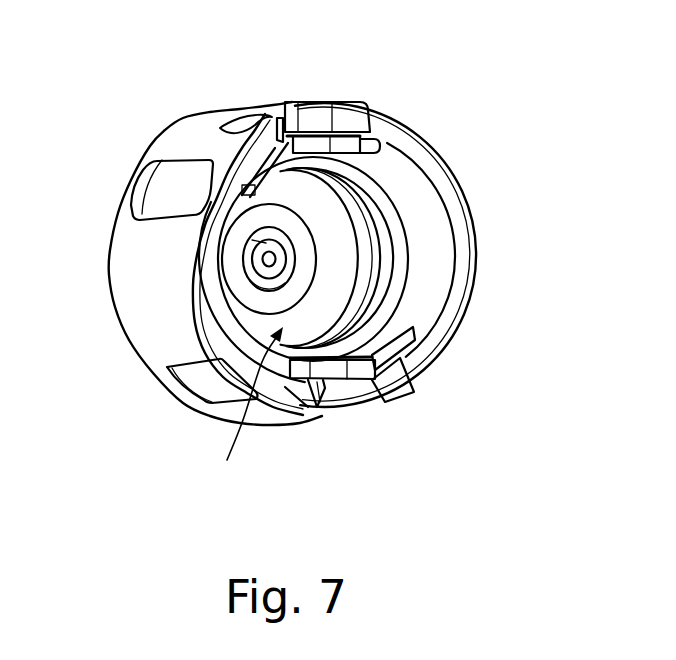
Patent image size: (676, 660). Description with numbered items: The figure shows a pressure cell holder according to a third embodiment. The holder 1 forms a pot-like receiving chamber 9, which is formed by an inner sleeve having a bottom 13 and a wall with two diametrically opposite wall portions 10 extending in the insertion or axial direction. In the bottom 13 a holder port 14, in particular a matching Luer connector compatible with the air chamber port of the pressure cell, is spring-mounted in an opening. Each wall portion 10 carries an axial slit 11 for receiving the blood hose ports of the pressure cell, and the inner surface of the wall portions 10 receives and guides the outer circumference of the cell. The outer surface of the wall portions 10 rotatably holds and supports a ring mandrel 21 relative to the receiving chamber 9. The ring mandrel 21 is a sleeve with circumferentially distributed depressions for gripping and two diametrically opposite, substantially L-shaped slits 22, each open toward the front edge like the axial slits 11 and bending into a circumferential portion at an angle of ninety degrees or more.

The holder 1 is at (74, 80).
The receiving chamber 9 is at (244, 408).
The wall portions 10 is at (402, 348).
The axial slit 11 is at (311, 140).
The bottom 13 is at (337, 247).
The holder port 14 is at (248, 270).
The ring mandrel 21 is at (168, 348).
The L-shaped slits 22 is at (237, 117).